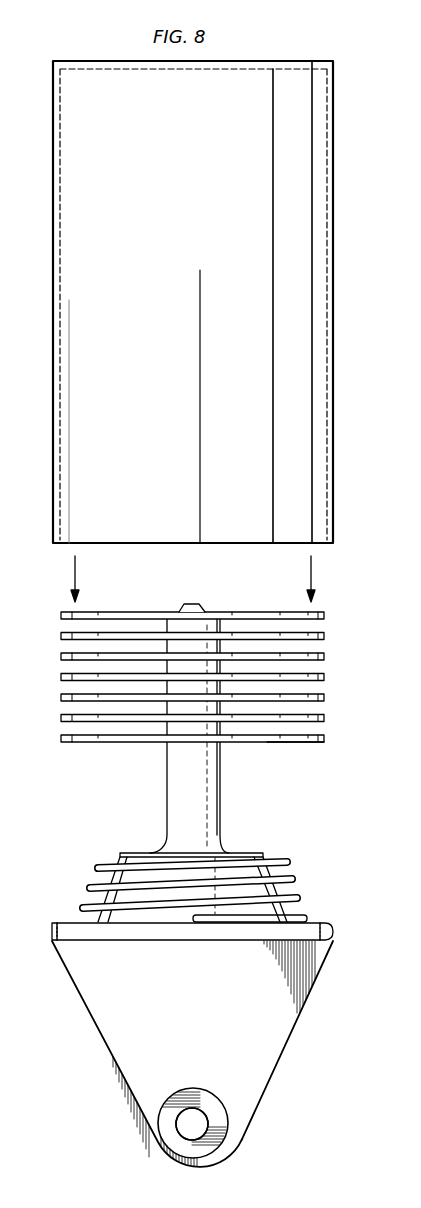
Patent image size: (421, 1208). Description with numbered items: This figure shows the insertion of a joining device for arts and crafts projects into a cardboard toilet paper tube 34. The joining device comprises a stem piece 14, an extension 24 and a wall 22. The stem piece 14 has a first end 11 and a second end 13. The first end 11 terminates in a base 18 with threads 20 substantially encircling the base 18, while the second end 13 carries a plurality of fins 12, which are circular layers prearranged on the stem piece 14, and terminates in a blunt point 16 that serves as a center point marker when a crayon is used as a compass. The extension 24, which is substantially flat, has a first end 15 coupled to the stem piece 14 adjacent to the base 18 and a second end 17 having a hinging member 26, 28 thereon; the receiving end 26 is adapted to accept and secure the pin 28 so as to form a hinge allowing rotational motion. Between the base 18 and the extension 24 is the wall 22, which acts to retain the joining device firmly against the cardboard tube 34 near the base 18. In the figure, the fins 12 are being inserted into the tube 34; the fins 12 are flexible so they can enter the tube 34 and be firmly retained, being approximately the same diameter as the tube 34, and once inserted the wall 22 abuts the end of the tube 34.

The cardboard tube 34 is at (205, 172).
The fins 12 is at (52, 610).
The second end 13 is at (298, 757).
The stem piece 14 is at (167, 796).
The blunt point 16 is at (186, 606).
The base 18 is at (120, 856).
The threads 20 is at (317, 855).
The first end 11 is at (185, 878).
The wall 22 is at (52, 929).
The first end 15 is at (166, 1054).
The extension 24 is at (287, 1045).
The second end 17 is at (176, 1083).
The receiving end 26 is at (200, 1088).
The pin 28 is at (200, 1088).